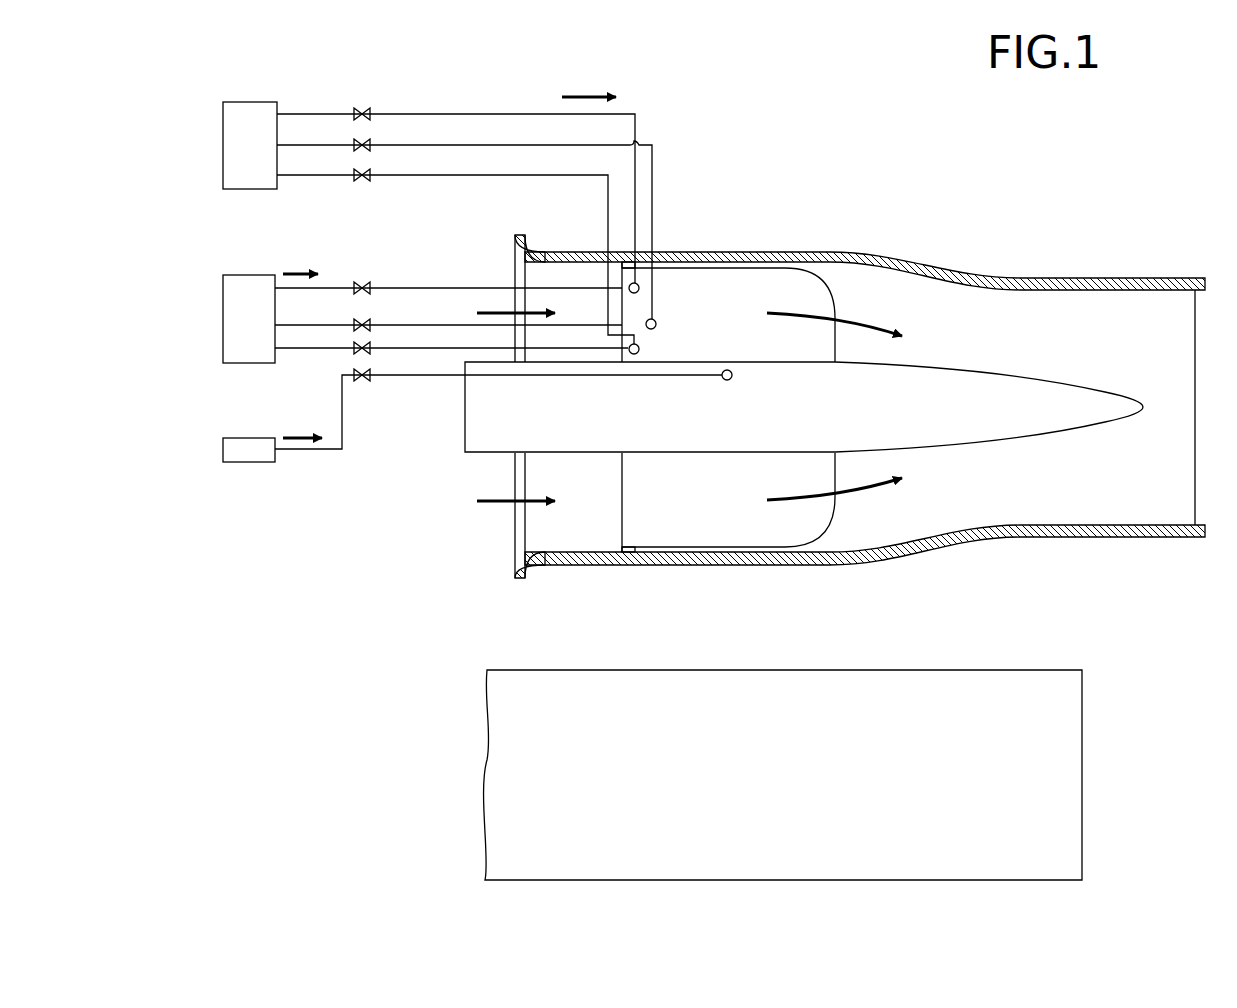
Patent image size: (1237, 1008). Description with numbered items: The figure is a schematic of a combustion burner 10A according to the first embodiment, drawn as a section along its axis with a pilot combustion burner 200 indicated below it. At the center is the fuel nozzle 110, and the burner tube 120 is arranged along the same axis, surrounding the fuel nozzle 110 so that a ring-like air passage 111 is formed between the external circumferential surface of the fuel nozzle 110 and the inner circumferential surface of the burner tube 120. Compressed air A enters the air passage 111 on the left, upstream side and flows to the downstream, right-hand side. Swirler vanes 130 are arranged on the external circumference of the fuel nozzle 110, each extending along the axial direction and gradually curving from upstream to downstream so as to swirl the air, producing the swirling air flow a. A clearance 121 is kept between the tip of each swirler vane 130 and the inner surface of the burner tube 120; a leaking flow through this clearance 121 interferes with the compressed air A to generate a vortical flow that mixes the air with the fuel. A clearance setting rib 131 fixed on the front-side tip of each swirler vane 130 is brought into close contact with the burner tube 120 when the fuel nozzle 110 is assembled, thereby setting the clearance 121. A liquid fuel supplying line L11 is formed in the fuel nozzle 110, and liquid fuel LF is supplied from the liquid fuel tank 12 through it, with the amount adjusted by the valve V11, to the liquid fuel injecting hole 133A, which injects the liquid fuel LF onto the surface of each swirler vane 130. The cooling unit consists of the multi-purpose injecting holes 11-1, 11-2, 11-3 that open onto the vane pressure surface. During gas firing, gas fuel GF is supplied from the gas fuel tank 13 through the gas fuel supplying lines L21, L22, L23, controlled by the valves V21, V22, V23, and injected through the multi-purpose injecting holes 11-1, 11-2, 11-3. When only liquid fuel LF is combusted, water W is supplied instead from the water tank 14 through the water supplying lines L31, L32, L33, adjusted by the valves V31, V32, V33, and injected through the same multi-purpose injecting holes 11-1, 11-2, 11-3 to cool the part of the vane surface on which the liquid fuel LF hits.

The combustion burner 10A is at (778, 116).
The multi-purpose injecting hole 11-1 is at (639, 285).
The multi-purpose injecting hole 11-2 is at (656, 321).
The multi-purpose injecting hole 11-3 is at (640, 349).
The liquid fuel tank 12 is at (224, 438).
The gas fuel tank 13 is at (224, 275).
The water tank 14 is at (224, 101).
The fuel nozzle 110 is at (1103, 400).
The air passage 111 is at (962, 300).
The burner tube 120 is at (915, 262).
The clearance 121 is at (800, 268).
The swirler vane 130 is at (745, 532).
The clearance setting rib 131 is at (628, 557).
The liquid fuel injecting hole 133A is at (727, 382).
The pilot combustion burner 200 is at (962, 670).
The liquid fuel supplying line L11 is at (312, 462).
The gas fuel supplying line L21 is at (343, 286).
The gas fuel supplying line L22 is at (290, 323).
The gas fuel supplying line L23 is at (290, 347).
The water supplying line L31 is at (477, 113).
The water supplying line L32 is at (476, 142).
The water supplying line L33 is at (476, 172).
The valve V11 is at (370, 379).
The valve V21 is at (372, 286).
The valve V22 is at (372, 323).
The valve V23 is at (372, 347).
The valve V31 is at (372, 112).
The valve V32 is at (372, 143).
The valve V33 is at (372, 173).
The gas fuel GF is at (280, 266).
The liquid fuel LF is at (296, 434).
The water W is at (580, 96).
The compressed air A is at (490, 303).
The swirling air flow a is at (883, 322).